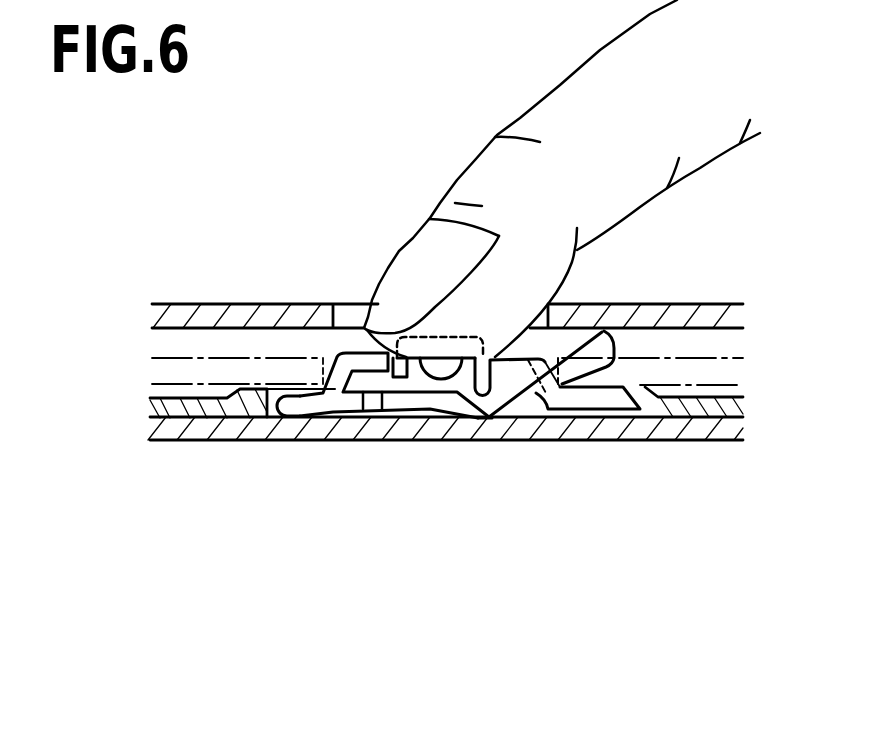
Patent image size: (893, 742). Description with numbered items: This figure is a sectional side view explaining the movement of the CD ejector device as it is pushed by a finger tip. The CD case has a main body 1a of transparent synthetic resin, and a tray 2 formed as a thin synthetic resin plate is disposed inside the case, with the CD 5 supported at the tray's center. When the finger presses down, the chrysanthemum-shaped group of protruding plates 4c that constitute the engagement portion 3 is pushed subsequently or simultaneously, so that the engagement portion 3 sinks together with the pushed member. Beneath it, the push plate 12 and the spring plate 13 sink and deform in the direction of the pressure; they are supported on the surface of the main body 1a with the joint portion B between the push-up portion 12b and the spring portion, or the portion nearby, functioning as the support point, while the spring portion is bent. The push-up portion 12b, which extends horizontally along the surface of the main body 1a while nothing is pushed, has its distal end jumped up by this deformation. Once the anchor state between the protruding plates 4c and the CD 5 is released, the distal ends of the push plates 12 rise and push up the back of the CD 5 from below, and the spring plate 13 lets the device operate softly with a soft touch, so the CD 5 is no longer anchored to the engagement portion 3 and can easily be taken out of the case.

The main body 1a is at (413, 437).
The tray 2 is at (176, 398).
The engagement portion 3 is at (432, 297).
The protruding plates 4c is at (354, 353).
The CD 5 is at (210, 306).
The push plate 12 is at (604, 326).
The push-up portion 12b is at (571, 367).
The spring plate 13 is at (293, 393).
The joint portion B is at (492, 416).